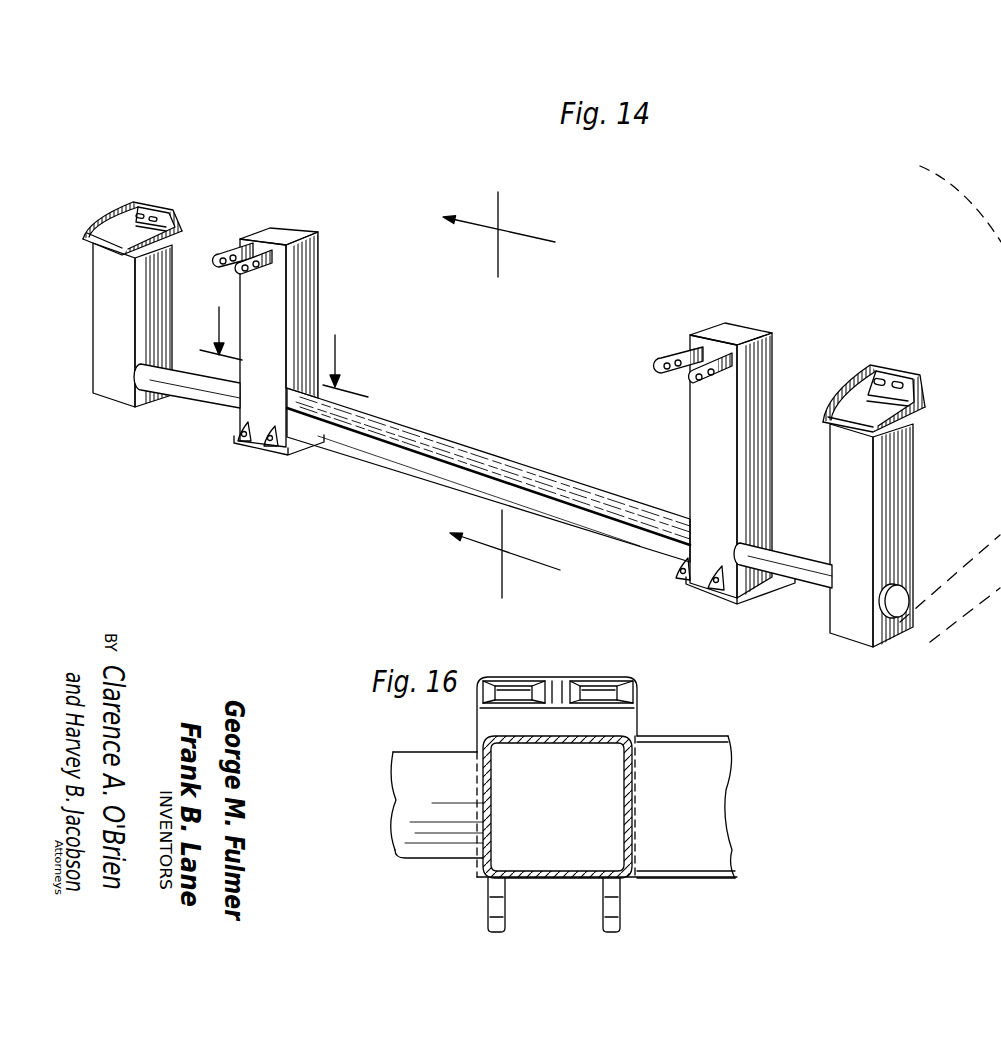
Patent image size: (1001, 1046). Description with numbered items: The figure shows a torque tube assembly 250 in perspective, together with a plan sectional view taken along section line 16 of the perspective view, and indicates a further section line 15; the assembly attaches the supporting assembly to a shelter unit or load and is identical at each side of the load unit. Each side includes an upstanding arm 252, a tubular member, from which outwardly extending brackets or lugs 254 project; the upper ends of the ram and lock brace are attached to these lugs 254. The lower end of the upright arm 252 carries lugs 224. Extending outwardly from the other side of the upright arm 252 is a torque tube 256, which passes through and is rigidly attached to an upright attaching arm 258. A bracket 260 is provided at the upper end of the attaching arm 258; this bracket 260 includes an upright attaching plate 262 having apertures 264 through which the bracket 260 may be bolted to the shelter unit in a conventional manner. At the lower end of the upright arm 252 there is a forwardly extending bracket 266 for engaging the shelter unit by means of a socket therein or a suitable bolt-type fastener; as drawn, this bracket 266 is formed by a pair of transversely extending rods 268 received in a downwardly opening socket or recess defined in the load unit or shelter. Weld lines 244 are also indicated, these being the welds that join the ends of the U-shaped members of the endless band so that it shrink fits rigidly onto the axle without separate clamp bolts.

In FIG. 14, the section line 15- 15 is at (496, 388).
In FIG. 14, the section line 16— 16 is at (282, 352).
In FIG. 14, the lugs 224 is at (275, 442).
In FIG. 16, the lugs 224 is at (612, 897).
In FIG. 14, the weld lines 244 is at (232, 257).
In FIG. 14, the torque tube assembly 250 is at (197, 418).
In FIG. 14, the upstanding arm 252 is at (300, 291).
In FIG. 16, the upstanding arm 252 is at (630, 813).
In FIG. 14, the brackets or lugs 254 is at (438, 450).
In FIG. 16, the brackets or lugs 254 is at (717, 766).
In FIG. 14, the torque tube 256 is at (233, 387).
In FIG. 16, the torque tube 256 is at (413, 767).
In FIG. 14, the upright attaching arm 258 is at (108, 306).
In FIG. 14, the bracket 260 is at (912, 400).
In FIG. 14, the upright attaching plate 262 is at (897, 372).
In FIG. 14, the apertures 264 is at (884, 378).
In FIG. 16, the forwardly extending bracket 266 is at (615, 725).
In FIG. 16, the transversely extending rods 268 is at (517, 688).